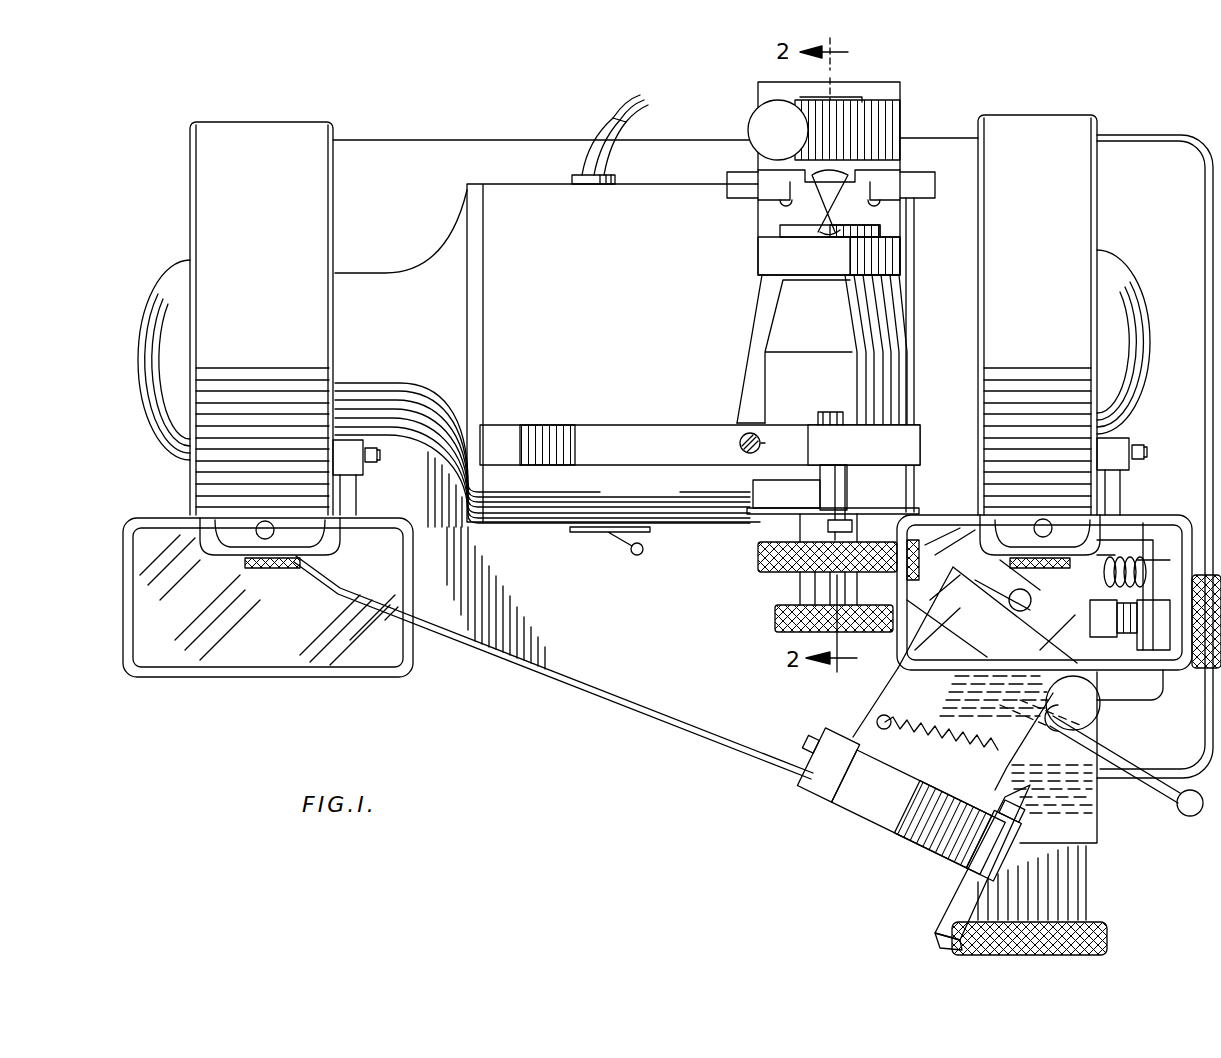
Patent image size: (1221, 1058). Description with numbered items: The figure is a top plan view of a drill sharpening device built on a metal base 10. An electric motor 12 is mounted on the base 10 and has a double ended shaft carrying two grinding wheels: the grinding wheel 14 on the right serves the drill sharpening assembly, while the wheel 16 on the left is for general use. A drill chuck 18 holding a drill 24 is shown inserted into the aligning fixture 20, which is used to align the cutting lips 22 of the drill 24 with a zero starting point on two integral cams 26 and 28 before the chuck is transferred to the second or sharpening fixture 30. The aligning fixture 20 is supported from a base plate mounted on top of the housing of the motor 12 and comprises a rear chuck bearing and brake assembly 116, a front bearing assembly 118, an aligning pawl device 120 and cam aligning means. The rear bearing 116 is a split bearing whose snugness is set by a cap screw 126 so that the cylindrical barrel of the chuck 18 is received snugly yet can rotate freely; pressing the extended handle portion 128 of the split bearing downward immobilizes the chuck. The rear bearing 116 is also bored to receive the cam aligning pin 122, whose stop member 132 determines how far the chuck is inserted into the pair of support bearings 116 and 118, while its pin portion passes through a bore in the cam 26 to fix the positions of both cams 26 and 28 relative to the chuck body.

The metal base 10 is at (610, 668).
The electric motor 12 is at (630, 357).
The grinding wheel 14 is at (1059, 592).
The grinding wheel 16 is at (265, 567).
The drill chuck 18 is at (770, 318).
The aligning fixture 20 is at (914, 298).
The cutting lips 22 is at (828, 185).
The drill 24 is at (810, 205).
The integral cam 26 is at (752, 515).
The integral cam 28 is at (760, 490).
The sharpening fixture 30 is at (1112, 800).
The rear chuck bearing and brake assembly 116 is at (750, 418).
The front bearing assembly 118 is at (745, 262).
The aligning pawl device 120 is at (745, 160).
The cam aligning pin 122 is at (850, 448).
The cap screw 126 is at (740, 438).
The extended handle portion 128 is at (566, 425).
The stop member 132 is at (783, 444).